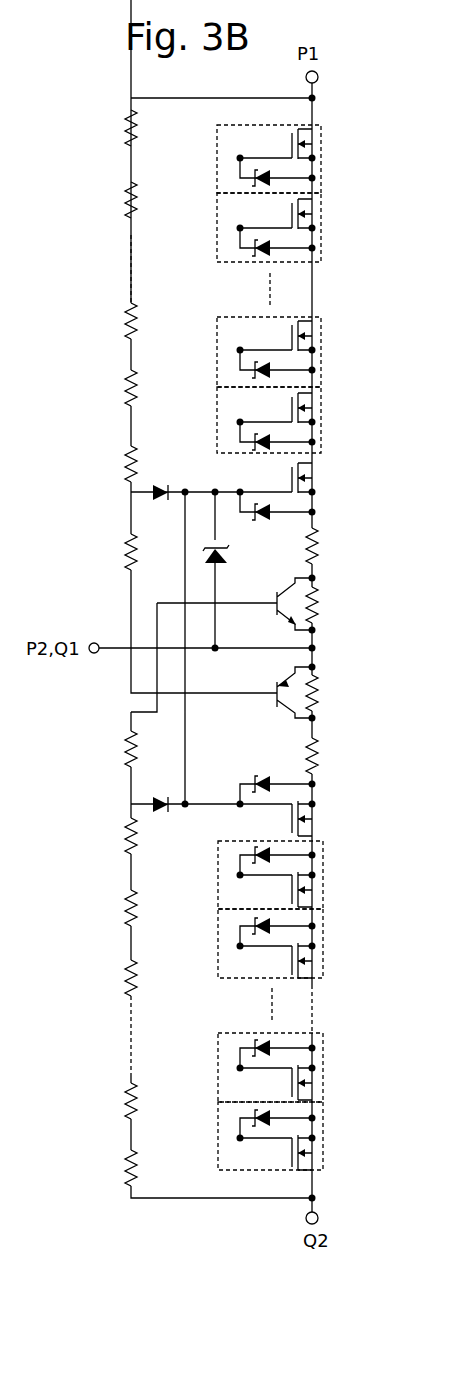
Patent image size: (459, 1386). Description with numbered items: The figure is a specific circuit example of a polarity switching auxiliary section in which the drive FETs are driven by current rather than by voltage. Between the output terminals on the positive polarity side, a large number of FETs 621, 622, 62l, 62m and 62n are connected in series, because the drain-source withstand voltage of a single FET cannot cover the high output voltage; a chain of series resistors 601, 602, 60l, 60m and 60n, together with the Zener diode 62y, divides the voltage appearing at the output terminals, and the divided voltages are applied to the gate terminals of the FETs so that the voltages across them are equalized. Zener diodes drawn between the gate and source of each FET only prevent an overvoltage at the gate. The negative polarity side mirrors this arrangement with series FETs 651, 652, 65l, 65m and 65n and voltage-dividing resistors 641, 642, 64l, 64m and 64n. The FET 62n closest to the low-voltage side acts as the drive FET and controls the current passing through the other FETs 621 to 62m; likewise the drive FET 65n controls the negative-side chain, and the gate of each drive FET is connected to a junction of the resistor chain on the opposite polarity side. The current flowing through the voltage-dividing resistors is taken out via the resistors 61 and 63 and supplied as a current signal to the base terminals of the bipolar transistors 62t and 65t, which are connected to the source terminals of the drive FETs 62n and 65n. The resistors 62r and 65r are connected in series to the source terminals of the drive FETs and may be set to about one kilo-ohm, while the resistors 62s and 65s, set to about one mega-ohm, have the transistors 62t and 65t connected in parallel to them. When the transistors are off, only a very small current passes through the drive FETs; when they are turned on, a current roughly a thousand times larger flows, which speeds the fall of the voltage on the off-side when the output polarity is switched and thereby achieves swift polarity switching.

The resistor 601 is at (108, 128).
The resistor 602 is at (108, 200).
The resistor 60l is at (108, 321).
The resistor 60m is at (108, 388).
The resistor 60n is at (108, 464).
The resistor 61 is at (114, 552).
The resistor 63 is at (114, 749).
The resistor 64n is at (108, 836).
The resistor 64m is at (108, 908).
The resistor 64l is at (111, 978).
The resistor 642 is at (108, 1101).
The resistor 641 is at (111, 1168).
The FET 621 is at (309, 138).
The FET 622 is at (309, 206).
The FET 62l is at (309, 331).
The FET 62m is at (309, 398).
The drive FET 62n is at (309, 470).
The resistor 62r is at (330, 546).
The resistor 62s is at (330, 605).
The bipolar transistor 62t is at (286, 601).
The Zener diode 62y is at (232, 555).
The resistor 65s is at (330, 693).
The bipolar transistor 65t is at (285, 698).
The resistor 65r is at (330, 756).
The drive FET 65n is at (316, 825).
The FET 65m is at (316, 898).
The FET 65l is at (316, 963).
The FET 652 is at (318, 1088).
The FET 651 is at (318, 1158).